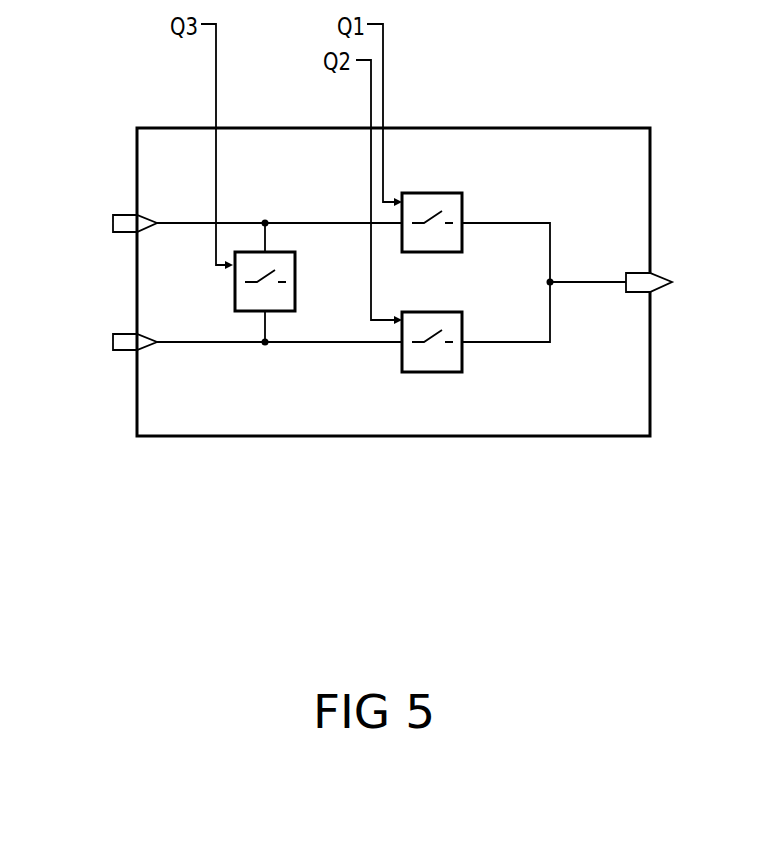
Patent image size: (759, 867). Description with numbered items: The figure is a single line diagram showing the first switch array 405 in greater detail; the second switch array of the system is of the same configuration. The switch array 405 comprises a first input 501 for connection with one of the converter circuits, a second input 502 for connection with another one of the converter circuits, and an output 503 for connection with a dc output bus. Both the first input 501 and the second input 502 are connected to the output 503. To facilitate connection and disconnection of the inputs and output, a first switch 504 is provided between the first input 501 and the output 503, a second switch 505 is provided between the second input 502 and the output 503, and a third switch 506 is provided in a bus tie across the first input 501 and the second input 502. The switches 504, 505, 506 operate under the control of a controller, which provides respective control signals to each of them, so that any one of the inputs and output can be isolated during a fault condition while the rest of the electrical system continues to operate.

The first switch array 405 is at (642, 161).
The first input 501 is at (118, 215).
The second input 502 is at (118, 334).
The output 503 is at (652, 274).
The first switch 504 is at (460, 193).
The second switch 505 is at (460, 312).
The third switch 506 is at (234, 284).